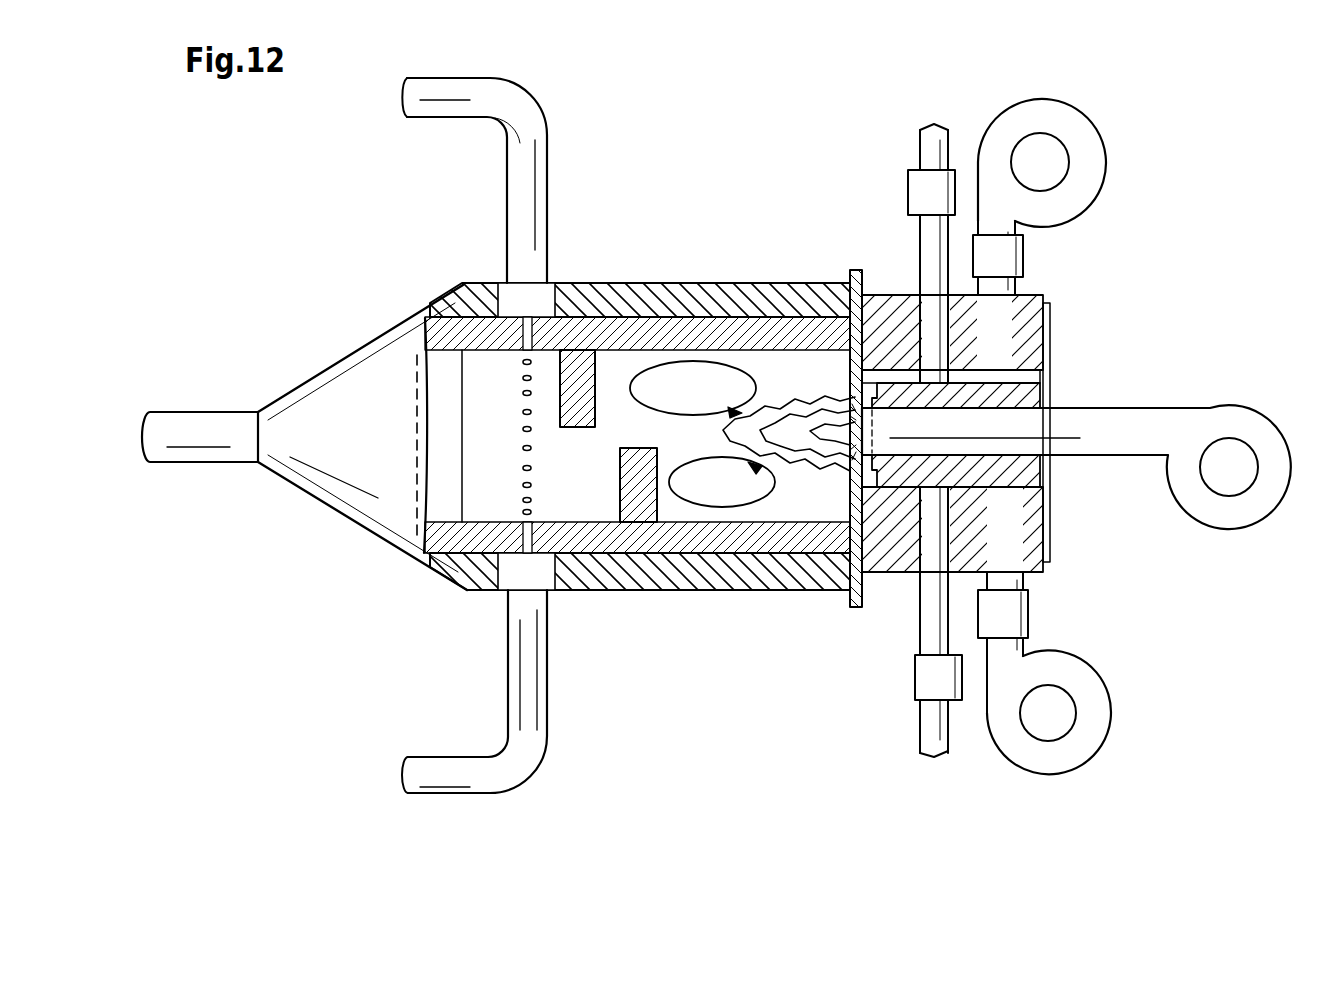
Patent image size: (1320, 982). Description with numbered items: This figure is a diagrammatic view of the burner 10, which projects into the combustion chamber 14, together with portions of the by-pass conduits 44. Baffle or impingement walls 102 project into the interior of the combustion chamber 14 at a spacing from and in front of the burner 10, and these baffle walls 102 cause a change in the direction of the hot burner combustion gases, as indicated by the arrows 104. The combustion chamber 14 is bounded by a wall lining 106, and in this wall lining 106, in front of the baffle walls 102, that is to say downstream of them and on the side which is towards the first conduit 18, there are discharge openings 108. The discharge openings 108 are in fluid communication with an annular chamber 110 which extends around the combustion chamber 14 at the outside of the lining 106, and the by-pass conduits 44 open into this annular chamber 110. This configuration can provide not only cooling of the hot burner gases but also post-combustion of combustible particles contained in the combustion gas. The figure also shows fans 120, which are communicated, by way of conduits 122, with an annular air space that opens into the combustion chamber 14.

The burner 10 is at (1212, 421).
The combustion chamber 14 is at (473, 470).
The first conduit 18 is at (198, 428).
The by-pass conduits 44 is at (515, 107).
The baffle or impingement walls 102 is at (598, 382).
The arrows 104 is at (735, 363).
The wall lining 106 is at (446, 300).
The discharge openings 108 is at (522, 362).
The annular chamber 110 is at (540, 284).
The fans 120 is at (1082, 158).
The conduits 122 is at (1003, 330).